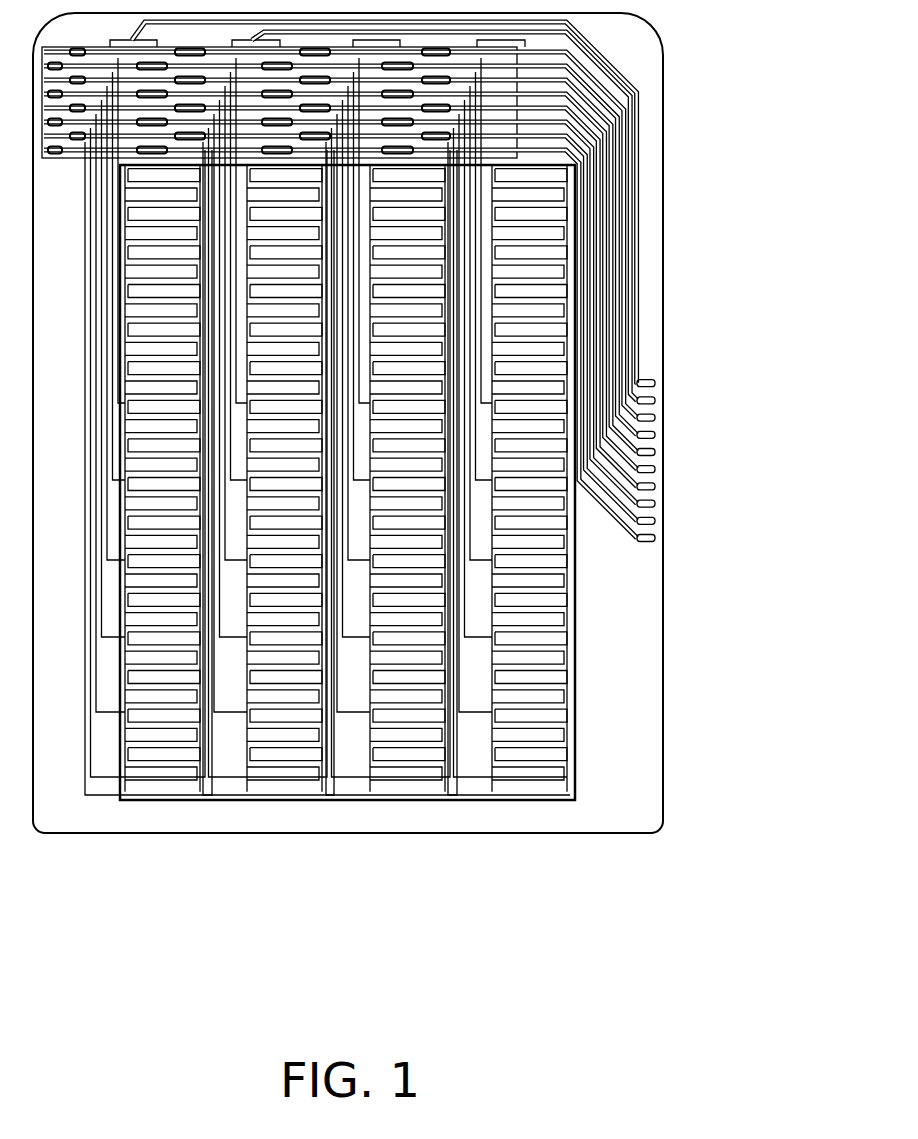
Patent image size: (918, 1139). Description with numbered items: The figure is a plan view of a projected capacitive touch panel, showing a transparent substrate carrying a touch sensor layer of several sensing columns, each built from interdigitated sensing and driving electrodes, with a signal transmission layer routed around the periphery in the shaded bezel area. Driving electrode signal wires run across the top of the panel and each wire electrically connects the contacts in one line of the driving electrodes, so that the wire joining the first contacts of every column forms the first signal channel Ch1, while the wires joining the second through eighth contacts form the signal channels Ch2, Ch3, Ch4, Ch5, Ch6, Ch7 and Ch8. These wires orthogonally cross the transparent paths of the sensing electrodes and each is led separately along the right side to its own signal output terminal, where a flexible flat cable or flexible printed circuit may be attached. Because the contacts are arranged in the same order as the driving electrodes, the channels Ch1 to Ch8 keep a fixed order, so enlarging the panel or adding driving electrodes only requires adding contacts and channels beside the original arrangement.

The first signal channel Ch1 is at (560, 53).
The second signal channel Ch2 is at (560, 66).
The third signal channel Ch3 is at (560, 80).
The fourth signal channel Ch4 is at (560, 94).
The fifth signal channel Ch5 is at (560, 108).
The sixth signal channel Ch6 is at (560, 122).
The seventh signal channel Ch7 is at (560, 136).
The eighth signal channel Ch8 is at (560, 150).